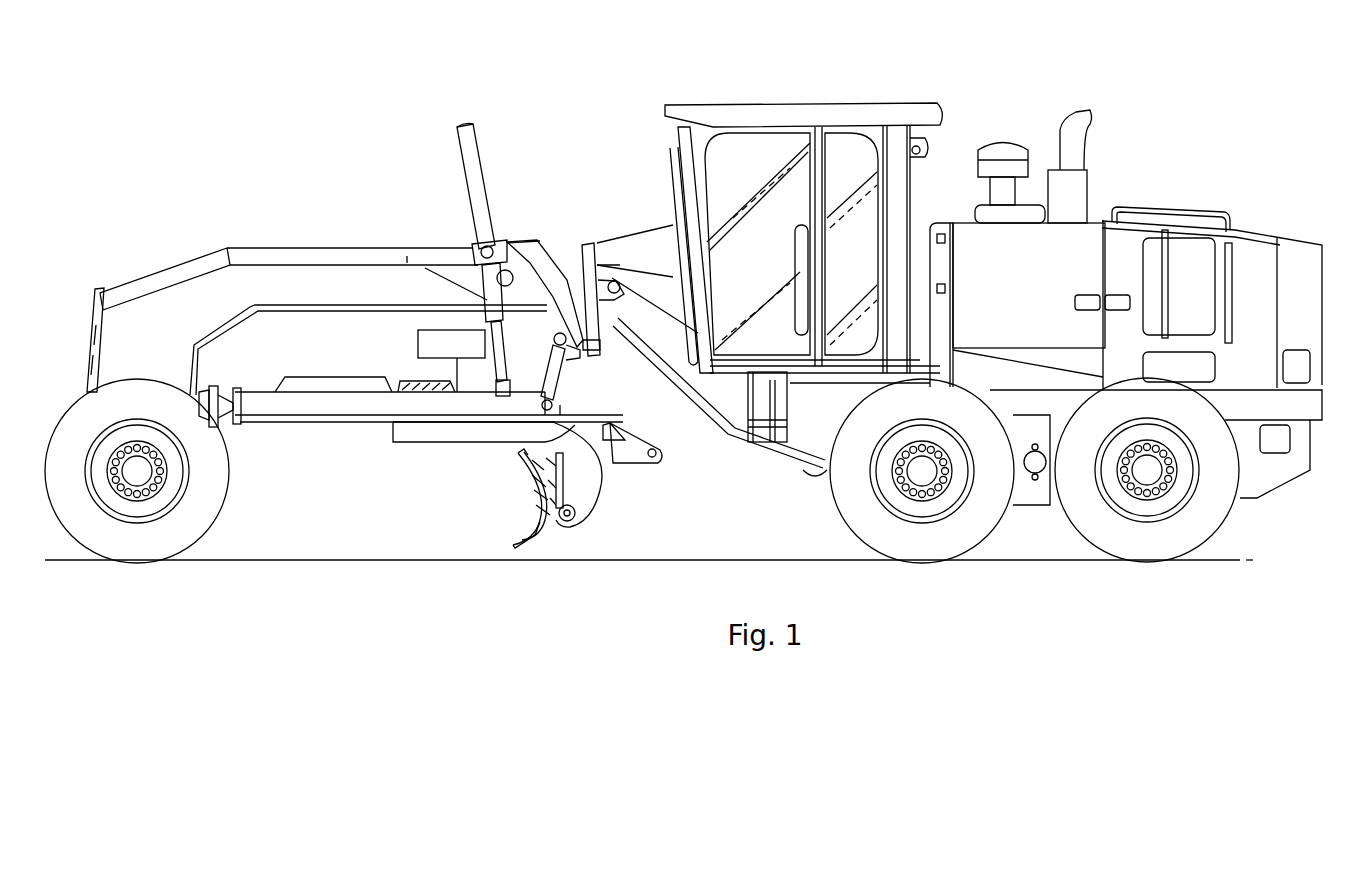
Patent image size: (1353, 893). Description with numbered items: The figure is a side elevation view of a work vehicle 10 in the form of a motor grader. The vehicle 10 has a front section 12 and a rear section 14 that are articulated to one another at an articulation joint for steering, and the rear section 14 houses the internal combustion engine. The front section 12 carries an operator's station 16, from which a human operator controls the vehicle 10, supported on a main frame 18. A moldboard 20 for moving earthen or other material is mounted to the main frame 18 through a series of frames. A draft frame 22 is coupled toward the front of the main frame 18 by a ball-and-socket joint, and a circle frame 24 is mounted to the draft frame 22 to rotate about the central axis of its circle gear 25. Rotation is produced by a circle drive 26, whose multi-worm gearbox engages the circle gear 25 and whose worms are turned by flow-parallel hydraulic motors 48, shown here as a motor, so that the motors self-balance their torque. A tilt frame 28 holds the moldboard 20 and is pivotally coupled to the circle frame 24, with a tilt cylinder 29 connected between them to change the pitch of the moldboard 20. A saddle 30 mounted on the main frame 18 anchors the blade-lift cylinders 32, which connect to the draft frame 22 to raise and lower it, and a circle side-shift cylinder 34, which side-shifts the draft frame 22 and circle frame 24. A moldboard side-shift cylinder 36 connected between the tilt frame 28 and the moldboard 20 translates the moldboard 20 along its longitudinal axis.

The work vehicle 10 is at (262, 180).
The front section 12 is at (230, 199).
The rear section 14 is at (1167, 161).
The operator's station 16 is at (768, 143).
The main frame 18 is at (330, 283).
The moldboard 20 is at (523, 540).
The draft frame 22 is at (312, 425).
The circle frame 24 is at (487, 456).
The circle gear 25 is at (418, 443).
The circle drive 26 is at (413, 362).
The tilt frame 28 is at (555, 525).
The tilt cylinder 29 is at (625, 455).
The saddle 30 is at (578, 290).
The blade-lift cylinder 32 is at (478, 152).
The circle side-shift cylinder 34 is at (575, 352).
The moldboard side-shift cylinder 36 is at (575, 492).
The hydraulic motor 48 is at (411, 330).